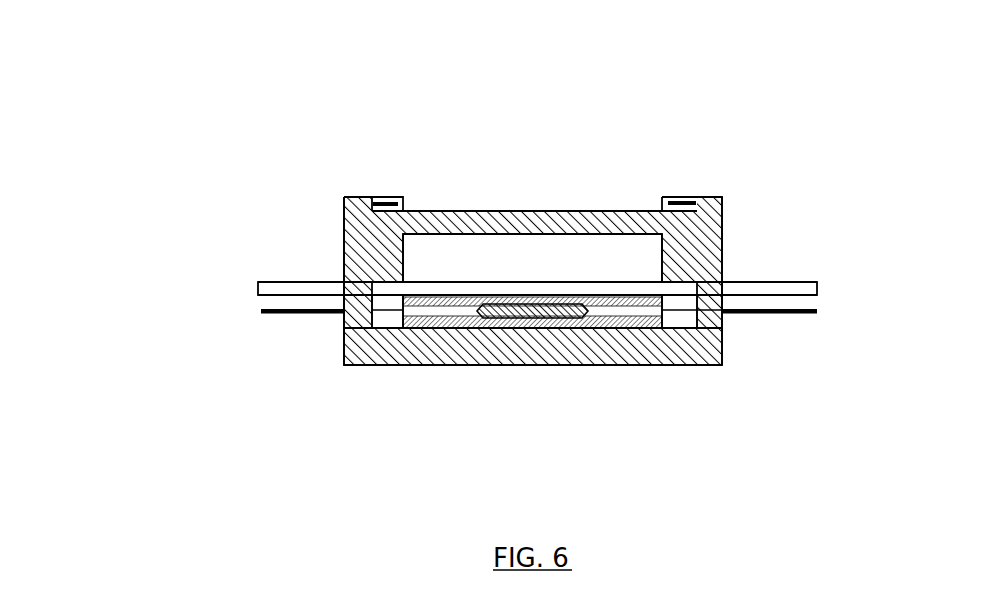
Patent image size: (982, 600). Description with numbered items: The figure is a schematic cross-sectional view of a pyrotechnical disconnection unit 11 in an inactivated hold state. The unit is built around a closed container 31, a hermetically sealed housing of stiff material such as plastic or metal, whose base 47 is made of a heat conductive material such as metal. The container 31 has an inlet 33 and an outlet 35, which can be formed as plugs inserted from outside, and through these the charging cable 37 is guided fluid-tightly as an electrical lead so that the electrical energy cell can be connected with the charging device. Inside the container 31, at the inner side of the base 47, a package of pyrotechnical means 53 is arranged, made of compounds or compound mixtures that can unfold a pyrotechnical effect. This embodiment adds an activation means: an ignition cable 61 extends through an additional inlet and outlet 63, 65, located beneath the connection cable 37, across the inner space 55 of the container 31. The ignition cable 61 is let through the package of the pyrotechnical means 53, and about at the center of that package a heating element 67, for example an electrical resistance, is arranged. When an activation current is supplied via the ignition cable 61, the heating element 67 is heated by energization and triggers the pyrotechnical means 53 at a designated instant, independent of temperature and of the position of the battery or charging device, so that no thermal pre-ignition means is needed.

The pyrotechnical disconnection unit 11 is at (854, 176).
The container 31 is at (719, 181).
The inlet/outlet 33 is at (723, 282).
The inlet/outlet 35 is at (343, 282).
The charging cable 37 is at (268, 287).
The base 47 is at (630, 342).
The pyrotechnical means 53 is at (441, 296).
The inner space 55 is at (602, 276).
The ignition cable 61 is at (275, 312).
The additional inlet/outlet 63 is at (722, 313).
The additional inlet/outlet 65 is at (343, 320).
The heating element 67 is at (503, 320).